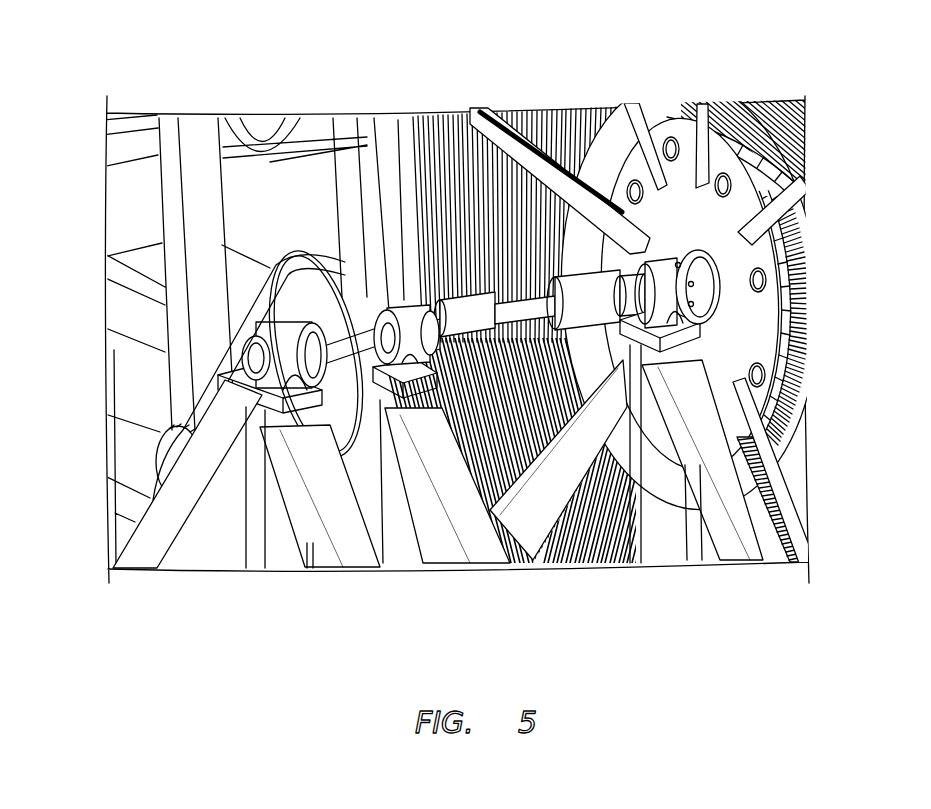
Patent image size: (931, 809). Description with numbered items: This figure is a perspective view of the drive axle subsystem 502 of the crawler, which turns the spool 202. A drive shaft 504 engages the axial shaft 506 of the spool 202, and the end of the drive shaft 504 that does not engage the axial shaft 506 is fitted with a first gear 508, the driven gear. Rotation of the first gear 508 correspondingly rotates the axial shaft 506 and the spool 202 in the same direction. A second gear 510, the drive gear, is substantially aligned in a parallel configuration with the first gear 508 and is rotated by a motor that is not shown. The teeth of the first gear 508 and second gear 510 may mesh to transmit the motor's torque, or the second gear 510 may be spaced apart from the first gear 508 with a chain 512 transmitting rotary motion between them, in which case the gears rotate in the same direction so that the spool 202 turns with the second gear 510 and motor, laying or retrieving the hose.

The spool 202 is at (400, 118).
The drive axle subsystem 502 is at (522, 350).
The drive shaft 504 is at (376, 300).
The axial shaft 506 is at (538, 310).
The first gear 508 is at (341, 432).
The second gear 510 is at (163, 466).
The chain 512 is at (166, 428).